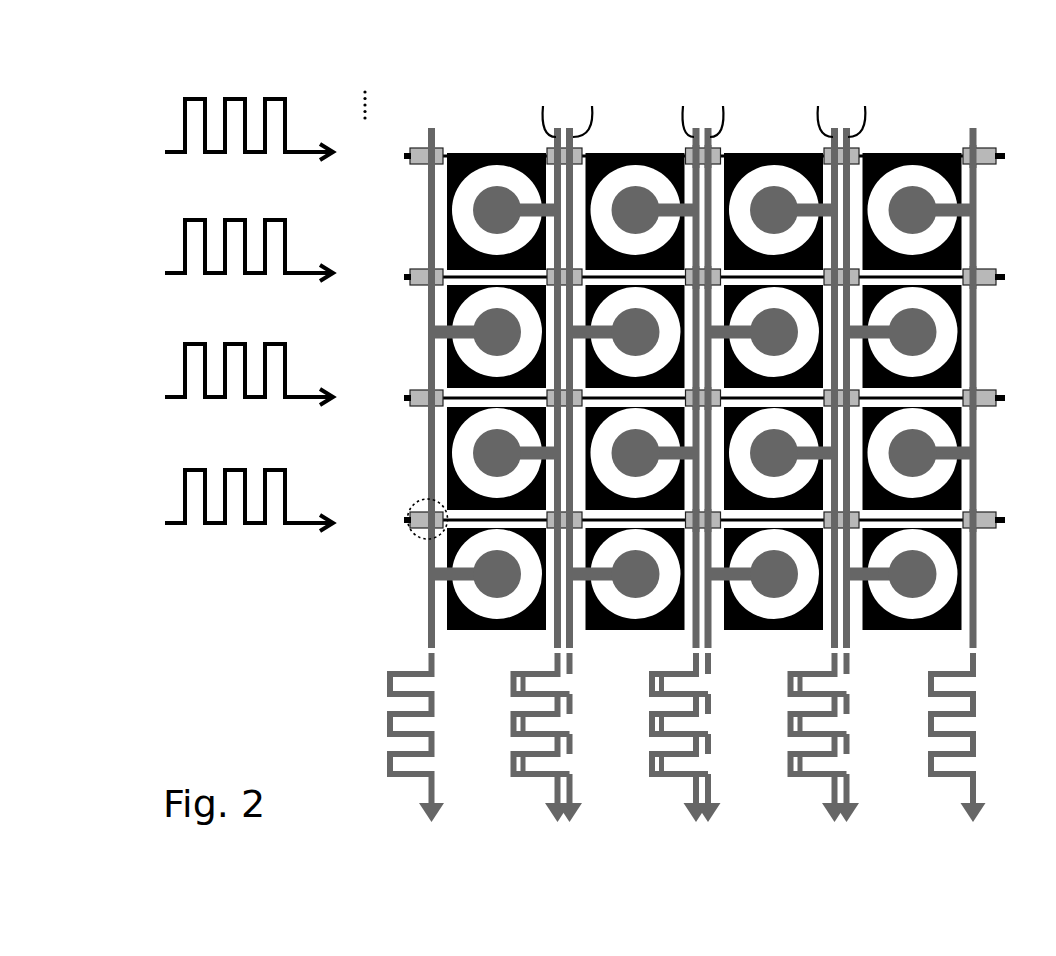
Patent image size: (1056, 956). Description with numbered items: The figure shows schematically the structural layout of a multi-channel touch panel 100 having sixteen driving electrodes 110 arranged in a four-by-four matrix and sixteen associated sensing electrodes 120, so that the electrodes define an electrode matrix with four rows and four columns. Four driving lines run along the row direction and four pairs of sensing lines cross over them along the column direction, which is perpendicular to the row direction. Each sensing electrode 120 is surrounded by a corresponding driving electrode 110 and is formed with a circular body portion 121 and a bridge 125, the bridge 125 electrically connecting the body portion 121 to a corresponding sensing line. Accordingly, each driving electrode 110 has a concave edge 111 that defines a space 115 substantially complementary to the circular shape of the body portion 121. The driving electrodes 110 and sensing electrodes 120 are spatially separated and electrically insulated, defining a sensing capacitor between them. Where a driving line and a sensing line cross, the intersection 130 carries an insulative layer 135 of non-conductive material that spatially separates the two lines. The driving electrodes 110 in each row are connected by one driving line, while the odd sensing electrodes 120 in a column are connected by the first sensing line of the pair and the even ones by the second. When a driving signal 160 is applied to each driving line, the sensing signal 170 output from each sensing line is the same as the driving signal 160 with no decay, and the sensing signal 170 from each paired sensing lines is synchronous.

The multi-channel touch panel 100 is at (712, 42).
The driving electrode 110 is at (457, 625).
The concave edge 111 is at (947, 597).
The space 115 is at (947, 573).
The sensing electrode 120 is at (503, 597).
The body portion 121 is at (493, 578).
The bridge 125 is at (448, 573).
The intersection 130 is at (427, 497).
The insulative layer 135 is at (422, 513).
The driving signal 160 is at (257, 525).
The sensing signal 170 is at (605, 786).